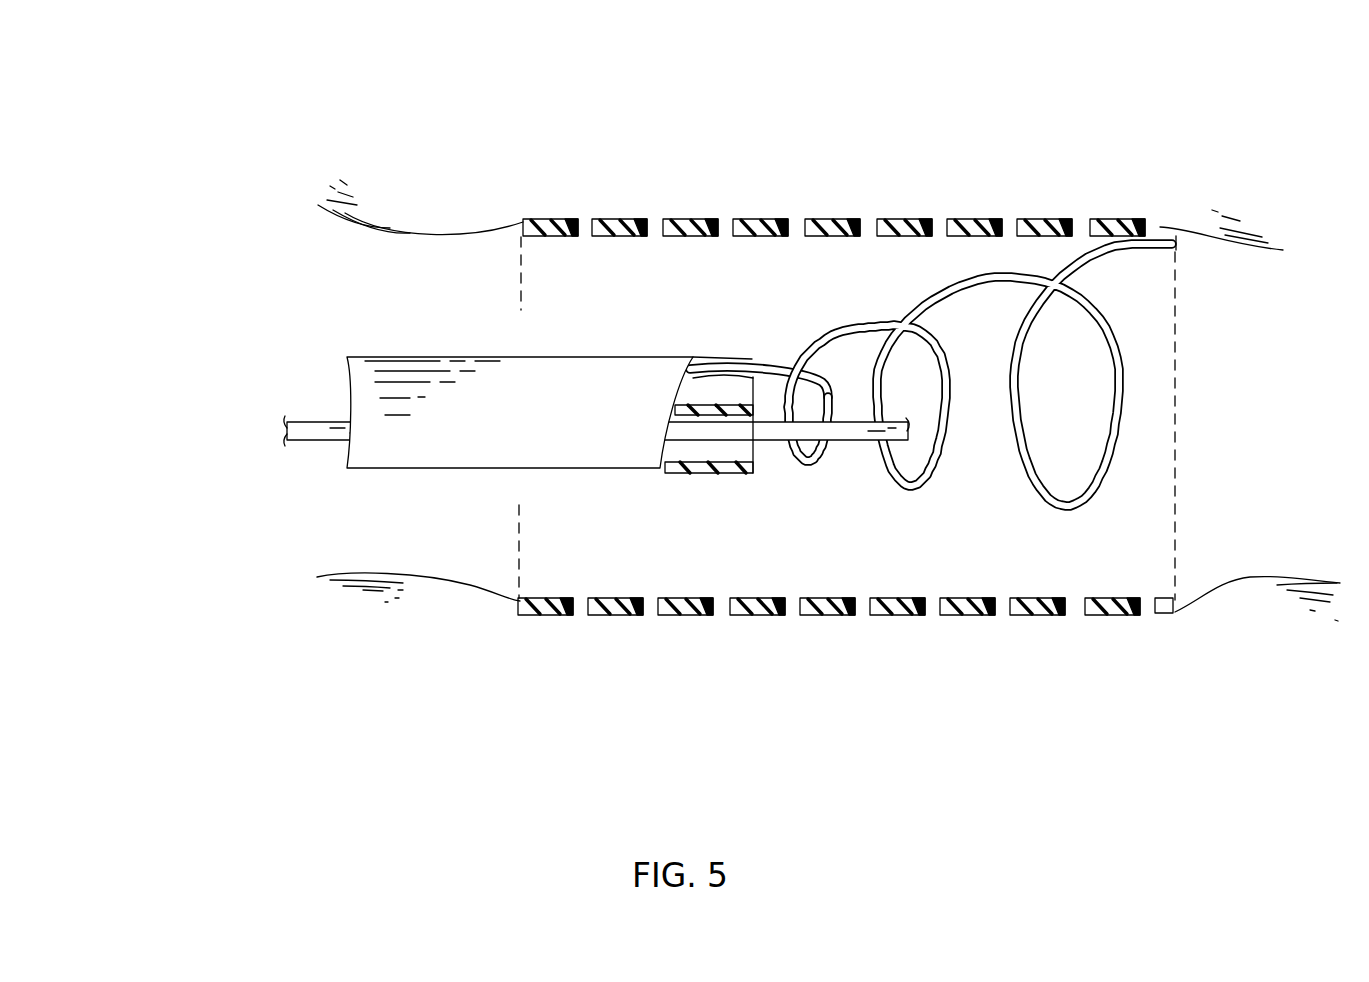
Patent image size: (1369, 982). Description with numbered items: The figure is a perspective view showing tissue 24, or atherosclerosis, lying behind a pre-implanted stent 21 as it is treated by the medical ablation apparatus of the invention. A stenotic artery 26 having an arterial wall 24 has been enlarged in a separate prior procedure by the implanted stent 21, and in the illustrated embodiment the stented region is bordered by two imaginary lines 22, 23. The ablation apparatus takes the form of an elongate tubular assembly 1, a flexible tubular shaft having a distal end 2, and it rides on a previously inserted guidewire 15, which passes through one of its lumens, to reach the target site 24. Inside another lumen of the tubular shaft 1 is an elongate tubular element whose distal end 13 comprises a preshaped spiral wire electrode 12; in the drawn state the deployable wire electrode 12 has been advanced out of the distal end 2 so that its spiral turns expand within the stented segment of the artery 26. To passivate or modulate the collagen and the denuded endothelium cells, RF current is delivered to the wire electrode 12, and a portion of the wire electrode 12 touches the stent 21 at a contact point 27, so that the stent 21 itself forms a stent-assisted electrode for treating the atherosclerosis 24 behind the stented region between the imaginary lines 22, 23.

The elongate tubular assembly 1 is at (370, 470).
The distal end 2 is at (757, 357).
The preshaped spiral wire electrode 12 is at (880, 327).
The distal end of the elongate tubular element 13 is at (1168, 255).
The guidewire 15 is at (310, 438).
The pre-implanted stent 21 is at (628, 218).
The imaginary line 22 is at (513, 573).
The imaginary line 23 is at (1163, 555).
The tissue 24 is at (393, 213).
The stenotic artery 26 is at (372, 297).
The contact point 27 is at (1130, 222).